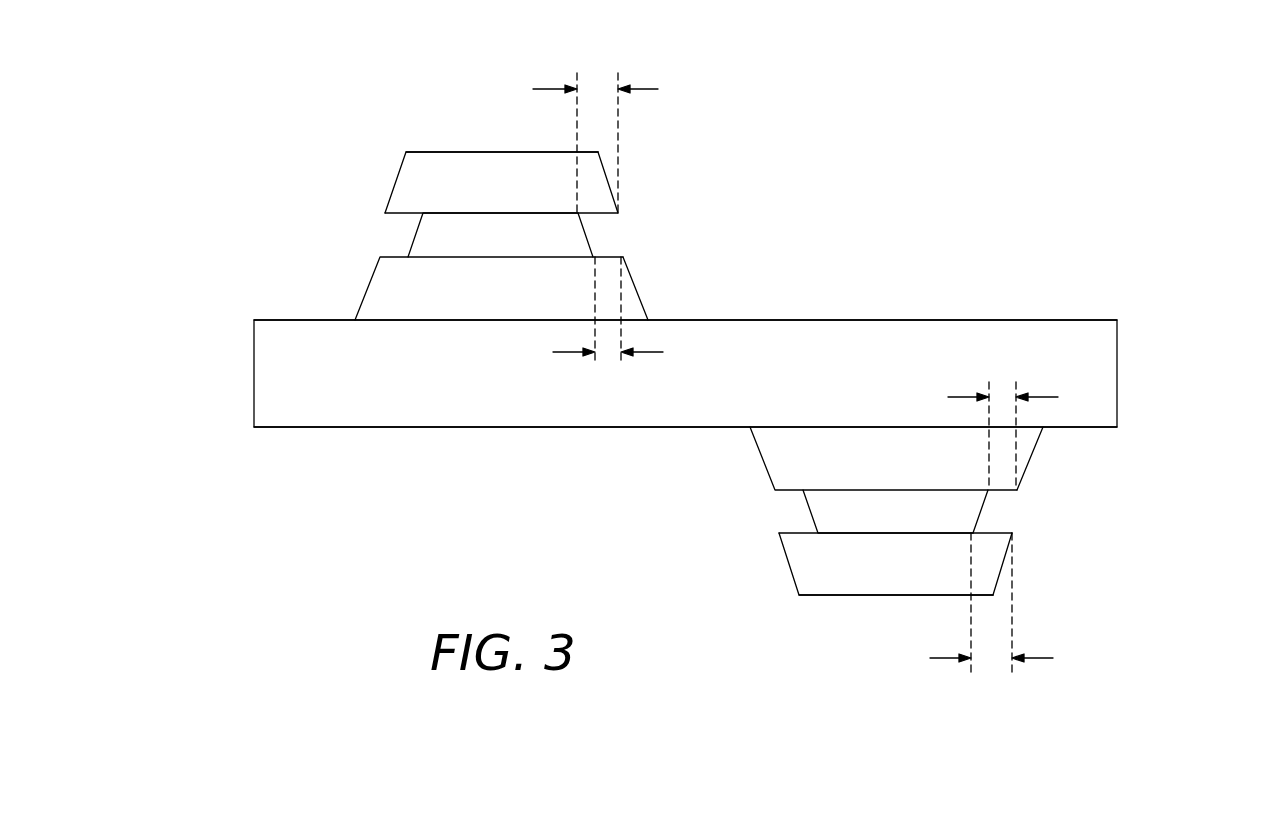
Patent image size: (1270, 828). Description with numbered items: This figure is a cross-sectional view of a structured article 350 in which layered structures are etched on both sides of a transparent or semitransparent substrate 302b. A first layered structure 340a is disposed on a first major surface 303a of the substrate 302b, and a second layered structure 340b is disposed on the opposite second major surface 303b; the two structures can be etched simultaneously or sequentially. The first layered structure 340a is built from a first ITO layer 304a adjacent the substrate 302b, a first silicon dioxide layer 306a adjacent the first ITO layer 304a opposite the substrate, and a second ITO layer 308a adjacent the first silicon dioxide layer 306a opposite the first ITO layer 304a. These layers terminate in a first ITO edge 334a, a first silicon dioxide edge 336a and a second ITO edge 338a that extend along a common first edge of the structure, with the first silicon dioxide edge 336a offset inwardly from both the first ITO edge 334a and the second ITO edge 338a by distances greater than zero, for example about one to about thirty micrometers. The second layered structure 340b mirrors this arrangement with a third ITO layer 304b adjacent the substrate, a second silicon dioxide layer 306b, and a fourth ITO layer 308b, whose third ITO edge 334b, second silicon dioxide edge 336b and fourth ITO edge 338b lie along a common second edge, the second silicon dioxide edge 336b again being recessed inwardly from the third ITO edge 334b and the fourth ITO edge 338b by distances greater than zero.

The structured article 350 is at (270, 88).
The substrate 302b is at (1087, 377).
The first major surface 303a is at (1062, 320).
The second major surface 303b is at (308, 427).
The first ITO layer 304a is at (383, 293).
The first ITO edge 334a is at (635, 283).
The first silicon dioxide layer 306a is at (422, 237).
The first silicon dioxide edge 336a is at (587, 233).
The second ITO layer 308a is at (410, 180).
The second ITO edge 338a is at (607, 175).
The first layered structure 340a is at (477, 152).
The third ITO layer 304b is at (777, 455).
The third ITO edge 334b is at (1030, 463).
The second silicon dioxide layer 306b is at (815, 510).
The second silicon dioxide edge 336b is at (978, 512).
The fourth ITO layer 308b is at (803, 568).
The fourth ITO edge 338b is at (1000, 572).
The second layered structure 340b is at (870, 595).